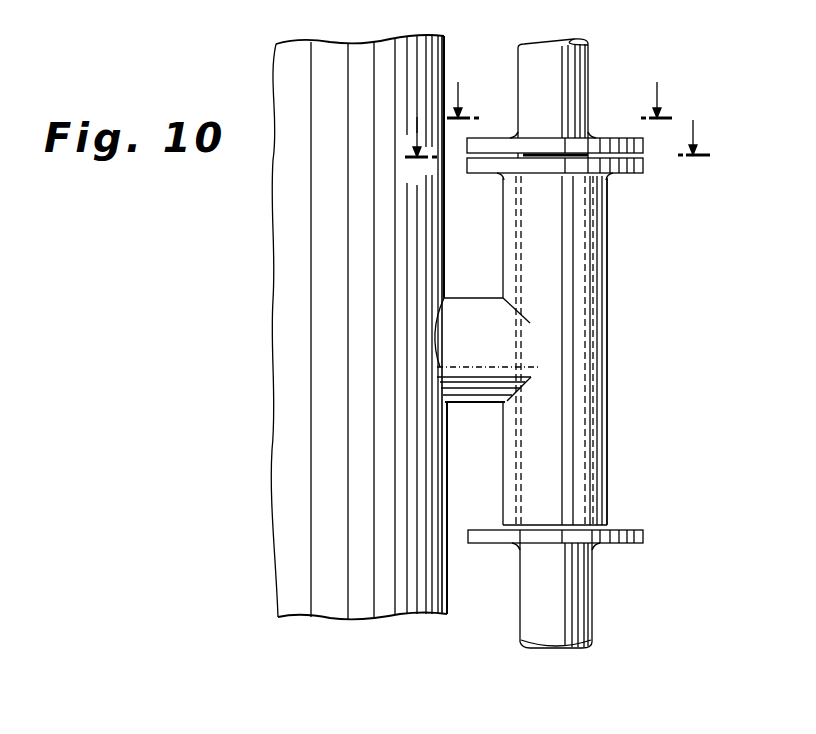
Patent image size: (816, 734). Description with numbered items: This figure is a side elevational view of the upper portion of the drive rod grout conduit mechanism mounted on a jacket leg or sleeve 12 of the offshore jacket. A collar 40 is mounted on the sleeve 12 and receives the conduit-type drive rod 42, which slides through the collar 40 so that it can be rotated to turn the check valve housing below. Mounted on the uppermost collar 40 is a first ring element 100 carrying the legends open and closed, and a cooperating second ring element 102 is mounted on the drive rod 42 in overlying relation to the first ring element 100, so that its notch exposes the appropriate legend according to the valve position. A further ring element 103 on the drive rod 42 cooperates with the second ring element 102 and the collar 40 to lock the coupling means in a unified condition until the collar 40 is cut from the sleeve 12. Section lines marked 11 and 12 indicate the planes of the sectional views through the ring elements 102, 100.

The section line 11- 11 is at (559, 113).
The sleeve 12 is at (290, 289).
The collar 40 is at (603, 395).
The drive rod 42 is at (585, 62).
The first ring element 100 is at (620, 178).
The second ring element 102 is at (608, 147).
The ring element 103 is at (645, 538).